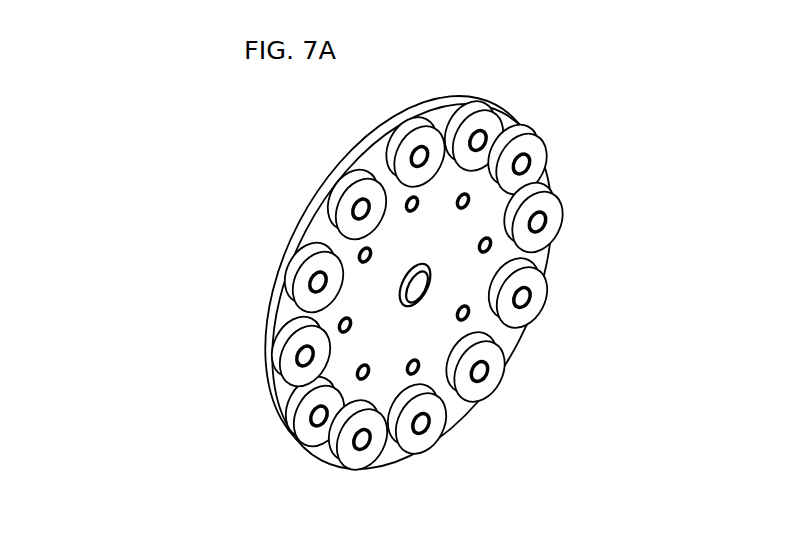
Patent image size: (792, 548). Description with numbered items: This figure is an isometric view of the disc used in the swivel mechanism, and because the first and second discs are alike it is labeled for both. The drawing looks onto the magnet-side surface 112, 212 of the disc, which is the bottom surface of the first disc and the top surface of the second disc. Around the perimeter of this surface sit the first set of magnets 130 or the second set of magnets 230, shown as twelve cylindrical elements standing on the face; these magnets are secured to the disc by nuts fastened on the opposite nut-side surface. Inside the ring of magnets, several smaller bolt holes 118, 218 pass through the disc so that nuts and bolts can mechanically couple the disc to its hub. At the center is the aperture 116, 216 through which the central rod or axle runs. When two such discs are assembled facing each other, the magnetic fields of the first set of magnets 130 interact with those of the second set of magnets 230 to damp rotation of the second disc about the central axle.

The magnet-side surface 112 is at (453, 282).
The magnet-side surface 212 is at (447, 323).
The aperture 116 is at (305, 257).
The aperture 216 is at (404, 279).
The bolt hole 118 is at (536, 286).
The bolt hole 218 is at (493, 244).
The first set of magnets 130 is at (502, 285).
The second set of magnets 230 is at (562, 203).